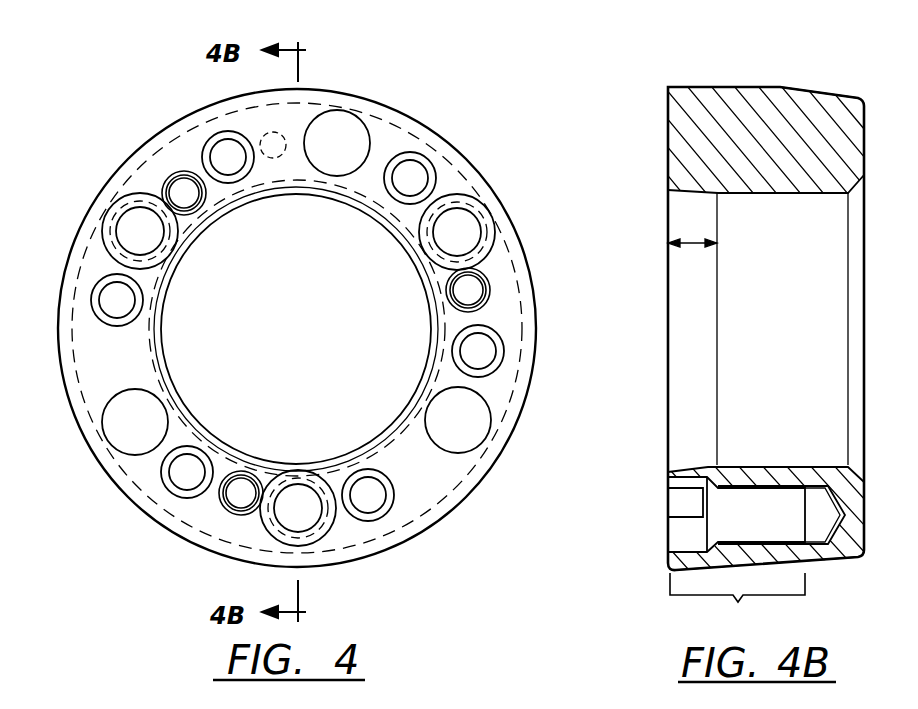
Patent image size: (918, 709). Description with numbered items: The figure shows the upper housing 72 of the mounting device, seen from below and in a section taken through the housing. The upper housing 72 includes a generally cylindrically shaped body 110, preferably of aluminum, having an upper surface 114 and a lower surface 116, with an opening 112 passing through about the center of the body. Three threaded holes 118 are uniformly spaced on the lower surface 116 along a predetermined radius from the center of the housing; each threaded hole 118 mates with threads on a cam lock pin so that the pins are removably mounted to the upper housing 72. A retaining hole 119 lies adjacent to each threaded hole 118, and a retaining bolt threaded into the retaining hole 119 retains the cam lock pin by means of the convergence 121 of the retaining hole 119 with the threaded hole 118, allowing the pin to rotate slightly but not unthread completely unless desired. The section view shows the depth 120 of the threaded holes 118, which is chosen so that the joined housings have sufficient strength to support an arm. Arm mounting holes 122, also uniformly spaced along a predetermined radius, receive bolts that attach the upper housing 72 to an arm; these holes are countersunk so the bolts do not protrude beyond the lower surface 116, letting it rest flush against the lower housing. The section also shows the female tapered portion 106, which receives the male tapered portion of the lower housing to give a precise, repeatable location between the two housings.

In FIG. 4, the upper housing 72 is at (405, 62).
In FIG. 4B, the upper housing 72 is at (755, 57).
In FIG. 4B, the female tapered portion 106 is at (672, 243).
In FIG. 4B, the body 110 is at (698, 88).
In FIG. 4, the opening 112 is at (328, 355).
In FIG. 4B, the opening 112 is at (740, 420).
In FIG. 4B, the upper surface 114 is at (868, 545).
In FIG. 4, the lower surface 116 is at (427, 496).
In FIG. 4B, the lower surface 116 is at (668, 560).
In FIG. 4, the threaded holes 118 is at (120, 235).
In FIG. 4B, the threaded holes 118 is at (715, 533).
In FIG. 4, the retaining holes 119 is at (185, 190).
In FIG. 4B, the depth 120 is at (737, 604).
In FIG. 4B, the convergence 121 is at (677, 500).
In FIG. 4, the arm mounting holes 122 is at (228, 150).